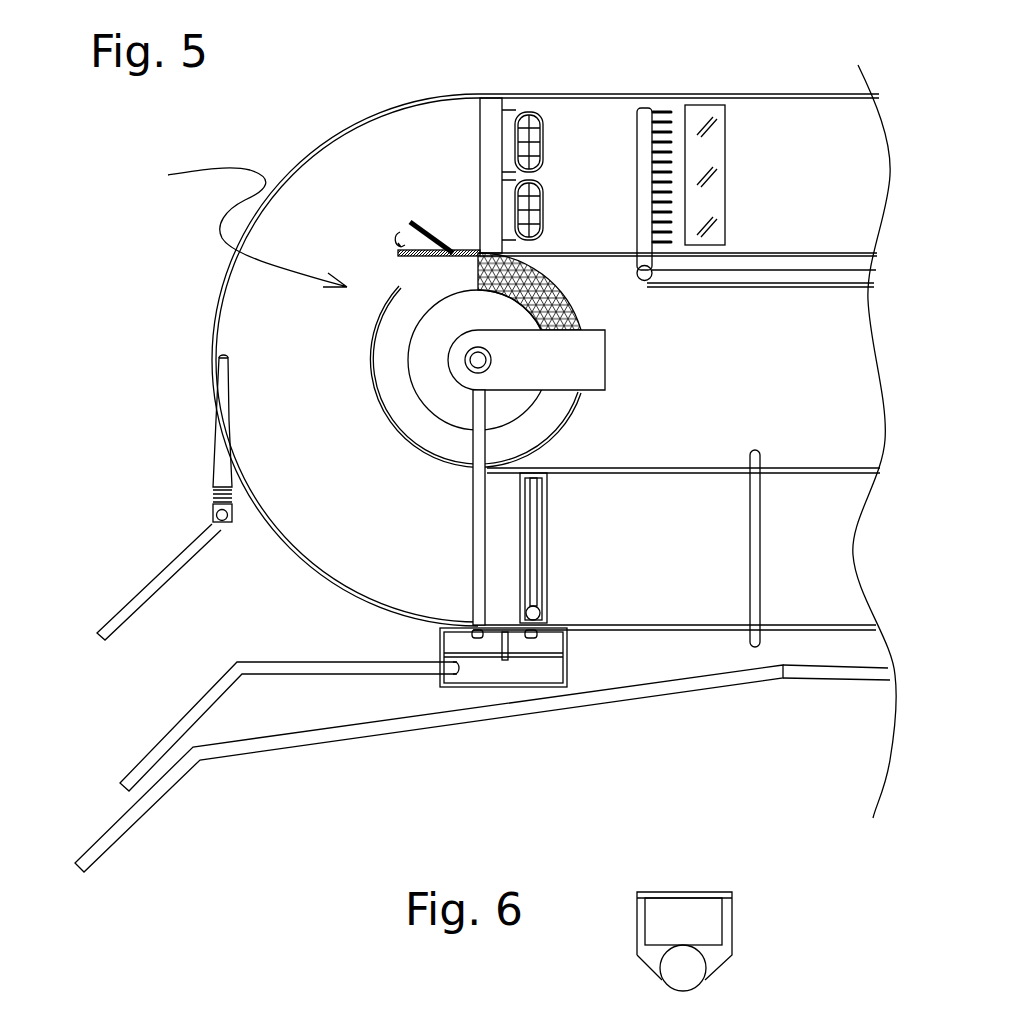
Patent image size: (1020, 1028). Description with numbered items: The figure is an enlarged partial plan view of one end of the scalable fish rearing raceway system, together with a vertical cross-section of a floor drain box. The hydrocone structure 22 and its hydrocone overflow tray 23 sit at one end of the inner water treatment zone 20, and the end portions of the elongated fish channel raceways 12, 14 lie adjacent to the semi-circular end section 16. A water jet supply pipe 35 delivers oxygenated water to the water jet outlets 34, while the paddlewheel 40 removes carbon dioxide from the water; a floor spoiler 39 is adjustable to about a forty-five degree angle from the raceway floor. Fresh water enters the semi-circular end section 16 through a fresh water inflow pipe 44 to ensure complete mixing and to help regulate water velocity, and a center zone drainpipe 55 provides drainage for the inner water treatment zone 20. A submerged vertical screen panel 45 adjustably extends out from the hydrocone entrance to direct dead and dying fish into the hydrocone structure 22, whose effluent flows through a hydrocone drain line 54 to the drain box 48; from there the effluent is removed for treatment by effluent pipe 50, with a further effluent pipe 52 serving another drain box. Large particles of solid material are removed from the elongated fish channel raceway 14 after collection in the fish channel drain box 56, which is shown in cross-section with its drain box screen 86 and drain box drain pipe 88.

In FIG. 5, the elongated fish channel raceway 12 is at (740, 113).
In FIG. 5, the elongated fish channel raceway 14 is at (695, 567).
In FIG. 5, the semi-circular end section 16 is at (373, 160).
In FIG. 5, the inner water treatment zone 20 is at (765, 383).
In FIG. 5, the hydrocone structure 22 is at (242, 225).
In FIG. 5, the hydrocone overflow tray 23 is at (477, 382).
In FIG. 5, the water jet outlets 34 is at (647, 105).
In FIG. 5, the water jet supply pipe 35 is at (783, 269).
In FIG. 5, the floor spoiler 39 is at (700, 118).
In FIG. 5, the paddlewheel 40 is at (538, 112).
In FIG. 5, the fresh water inflow pipe 44 is at (223, 462).
In FIG. 5, the submerged vertical screen panel 45 is at (423, 223).
In FIG. 5, the drain box 48 is at (543, 668).
In FIG. 5, the effluent pipe 50 is at (293, 745).
In FIG. 5, the effluent pipe 52 is at (160, 743).
In FIG. 5, the hydrocone drain line 54 is at (473, 493).
In FIG. 5, the center zone drainpipe 55 is at (760, 550).
In FIG. 5, the fish channel drain box 56 is at (547, 550).
In FIG. 6, the fish channel drain box 56 is at (644, 907).
In FIG. 6, the drain box screen 86 is at (680, 891).
In FIG. 6, the drain box drain pipe 88 is at (675, 977).